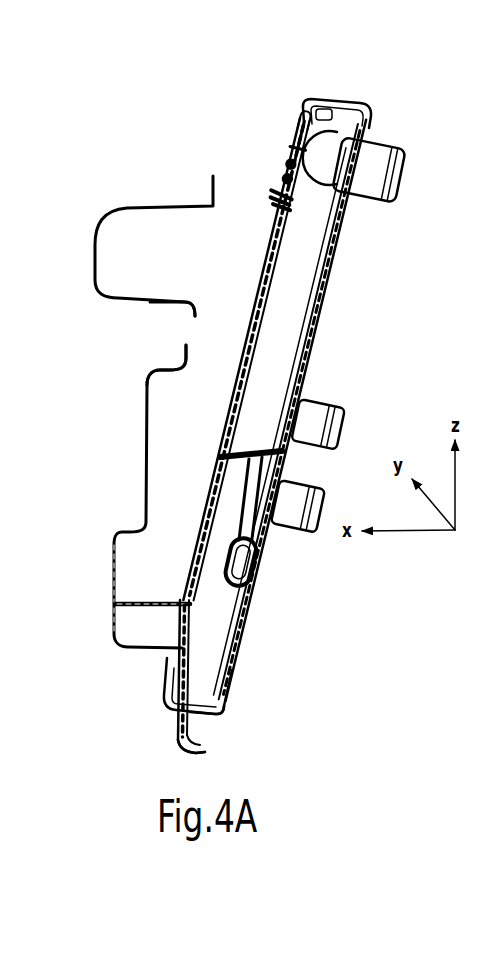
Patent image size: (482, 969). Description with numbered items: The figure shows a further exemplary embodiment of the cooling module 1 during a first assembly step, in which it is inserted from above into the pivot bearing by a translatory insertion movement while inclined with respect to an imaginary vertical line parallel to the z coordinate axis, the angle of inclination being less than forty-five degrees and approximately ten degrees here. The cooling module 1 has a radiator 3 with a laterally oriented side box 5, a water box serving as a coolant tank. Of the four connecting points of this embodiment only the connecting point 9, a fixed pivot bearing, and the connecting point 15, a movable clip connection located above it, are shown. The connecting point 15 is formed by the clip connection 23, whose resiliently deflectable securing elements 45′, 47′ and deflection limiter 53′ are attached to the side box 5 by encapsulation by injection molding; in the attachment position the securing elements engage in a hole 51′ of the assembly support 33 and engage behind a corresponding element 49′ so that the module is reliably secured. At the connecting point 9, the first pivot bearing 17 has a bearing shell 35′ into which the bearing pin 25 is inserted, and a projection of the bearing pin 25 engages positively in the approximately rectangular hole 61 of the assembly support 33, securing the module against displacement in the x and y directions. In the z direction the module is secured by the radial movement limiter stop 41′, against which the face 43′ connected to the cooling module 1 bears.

The cooling module 1 is at (372, 108).
The radiator 3 is at (385, 128).
The side box 5 is at (310, 237).
The connecting point 9 is at (223, 733).
The connecting point 15 is at (277, 157).
The first pivot bearing 17 is at (244, 699).
The clip connection 23 is at (280, 132).
The bearing pin 25 is at (254, 551).
The assembly support 33 is at (126, 434).
The bearing shell 35′ is at (182, 756).
The radial movement limiter stop 41′ is at (174, 598).
The face 43′ is at (266, 447).
The securing element 45′ is at (283, 198).
The securing element 47′ is at (281, 165).
The corresponding element 49′ is at (172, 372).
The hole 51′ is at (184, 333).
The deflection limiter 53′ is at (294, 145).
The hole 61 is at (176, 717).